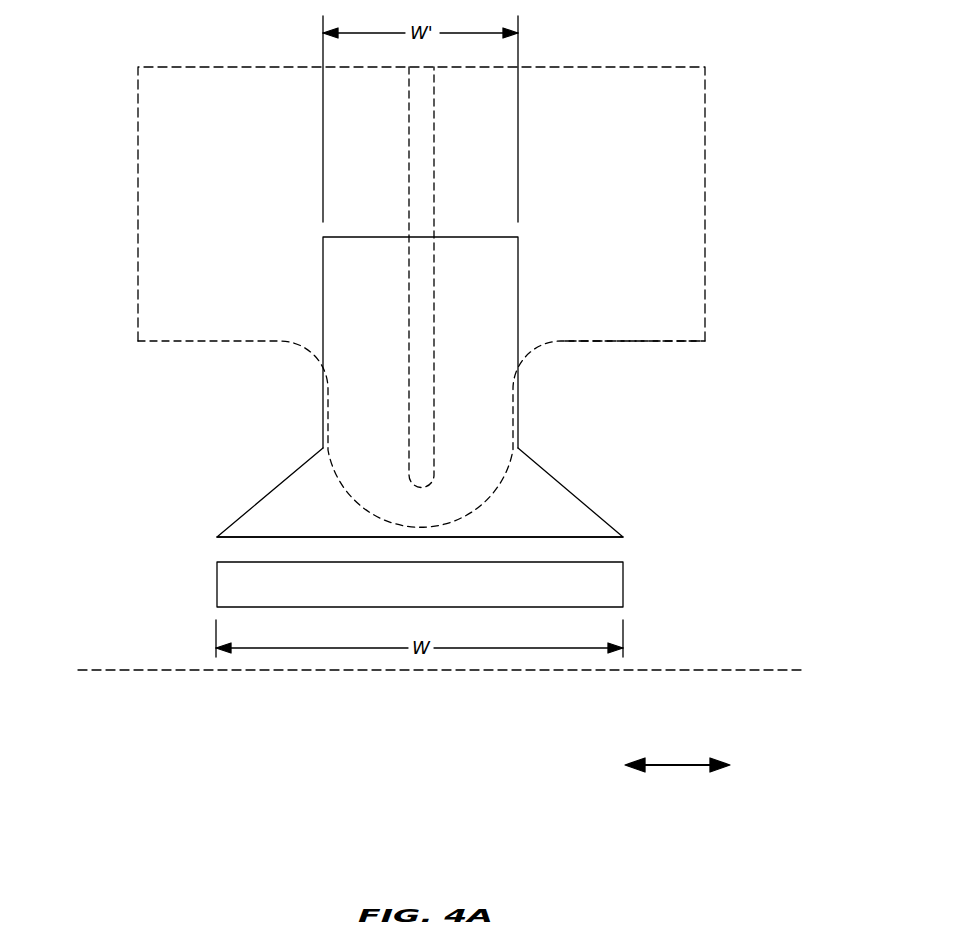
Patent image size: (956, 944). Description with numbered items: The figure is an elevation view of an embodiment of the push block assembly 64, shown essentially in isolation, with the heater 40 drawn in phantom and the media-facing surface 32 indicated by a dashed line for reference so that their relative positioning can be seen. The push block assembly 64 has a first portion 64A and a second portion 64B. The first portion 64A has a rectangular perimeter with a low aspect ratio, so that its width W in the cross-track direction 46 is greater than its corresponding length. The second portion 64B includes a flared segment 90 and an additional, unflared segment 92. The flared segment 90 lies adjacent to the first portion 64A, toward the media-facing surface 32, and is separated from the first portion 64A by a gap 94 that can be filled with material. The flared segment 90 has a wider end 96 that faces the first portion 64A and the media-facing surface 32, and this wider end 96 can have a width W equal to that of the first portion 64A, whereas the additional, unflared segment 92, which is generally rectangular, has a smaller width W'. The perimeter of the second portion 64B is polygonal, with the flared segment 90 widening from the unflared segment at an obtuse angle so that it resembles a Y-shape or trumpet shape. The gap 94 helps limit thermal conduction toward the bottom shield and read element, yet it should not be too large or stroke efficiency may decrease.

The heater 40 is at (715, 307).
The additional, unflared segment 92 is at (518, 395).
The flared segment 90 is at (553, 491).
The wider end 96 is at (597, 538).
The first portion 64A is at (115, 565).
The second portion 64B is at (115, 237).
The gap 94 is at (115, 537).
The push block assembly 64 is at (778, 377).
The media-facing surface 32 is at (787, 672).
The cross-track direction 46 is at (672, 768).